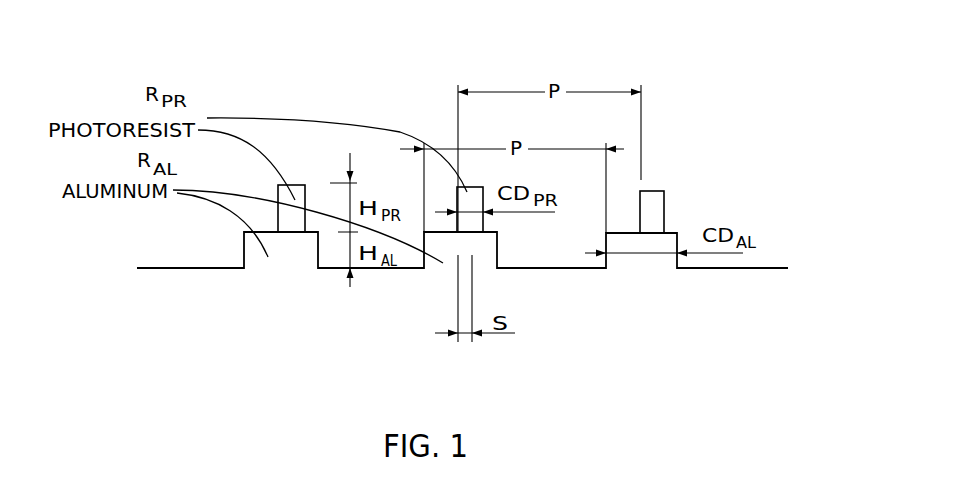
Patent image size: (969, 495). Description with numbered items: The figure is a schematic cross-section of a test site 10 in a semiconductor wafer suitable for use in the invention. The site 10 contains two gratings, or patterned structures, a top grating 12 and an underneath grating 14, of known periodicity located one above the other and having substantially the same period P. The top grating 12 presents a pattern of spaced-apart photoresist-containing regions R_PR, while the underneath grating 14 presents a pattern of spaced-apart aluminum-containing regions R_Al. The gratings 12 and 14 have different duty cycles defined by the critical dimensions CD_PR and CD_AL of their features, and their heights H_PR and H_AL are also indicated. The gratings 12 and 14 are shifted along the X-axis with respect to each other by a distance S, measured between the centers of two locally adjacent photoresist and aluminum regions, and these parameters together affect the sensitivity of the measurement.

The test site 10 is at (442, 189).
The top grating 12 is at (663, 180).
The underneath grating 14 is at (193, 293).